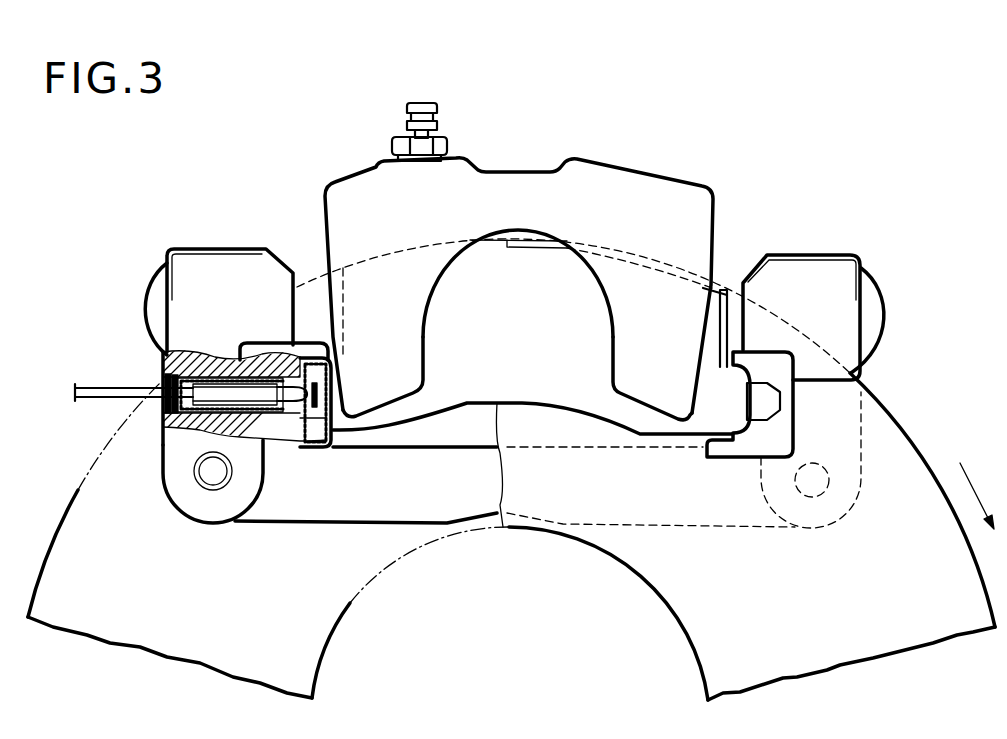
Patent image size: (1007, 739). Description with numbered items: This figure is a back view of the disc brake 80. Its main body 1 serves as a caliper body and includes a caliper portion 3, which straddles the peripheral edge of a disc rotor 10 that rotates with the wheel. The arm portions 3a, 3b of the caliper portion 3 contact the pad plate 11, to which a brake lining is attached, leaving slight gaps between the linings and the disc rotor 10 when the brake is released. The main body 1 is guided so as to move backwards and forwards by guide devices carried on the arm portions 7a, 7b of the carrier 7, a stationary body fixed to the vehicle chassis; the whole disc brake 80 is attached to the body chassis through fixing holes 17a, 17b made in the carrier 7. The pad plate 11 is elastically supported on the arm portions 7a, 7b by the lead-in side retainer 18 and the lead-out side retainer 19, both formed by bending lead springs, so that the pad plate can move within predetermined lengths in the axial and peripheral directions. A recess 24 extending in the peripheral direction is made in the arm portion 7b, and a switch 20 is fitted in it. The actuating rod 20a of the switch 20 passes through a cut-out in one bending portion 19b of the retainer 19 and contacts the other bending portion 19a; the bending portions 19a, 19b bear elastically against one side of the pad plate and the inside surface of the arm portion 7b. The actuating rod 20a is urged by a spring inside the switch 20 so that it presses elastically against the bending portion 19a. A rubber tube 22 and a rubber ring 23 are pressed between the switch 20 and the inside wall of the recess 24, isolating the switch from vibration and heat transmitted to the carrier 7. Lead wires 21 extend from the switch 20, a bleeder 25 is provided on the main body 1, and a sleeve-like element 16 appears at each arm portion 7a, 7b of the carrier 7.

The main body 1 is at (644, 163).
The caliper portion 3 is at (573, 170).
The arm portion 3a is at (413, 333).
The arm portion 3b is at (620, 328).
The carrier 7 is at (417, 497).
The arm portion 7a is at (797, 282).
The arm portion 7b is at (212, 262).
The disc rotor 10 is at (897, 463).
The pad plate 11 is at (463, 392).
The guide sleeve 16 is at (160, 300).
The fixing hole 17a is at (817, 493).
The fixing hole 17b is at (213, 484).
The lead-in side retainer 18 is at (750, 430).
The lead-out side retainer 19 is at (320, 445).
The bending portion 19a is at (313, 398).
The bending portion 19b is at (290, 367).
The switch 20 is at (223, 388).
The actuating rod 20a is at (297, 447).
The lead wires 21 is at (100, 387).
The rubber tube 22 is at (214, 384).
The rubber ring 23 is at (168, 385).
The recess 24 is at (165, 404).
The bleeder 25 is at (413, 132).
The disc brake 80 is at (752, 185).